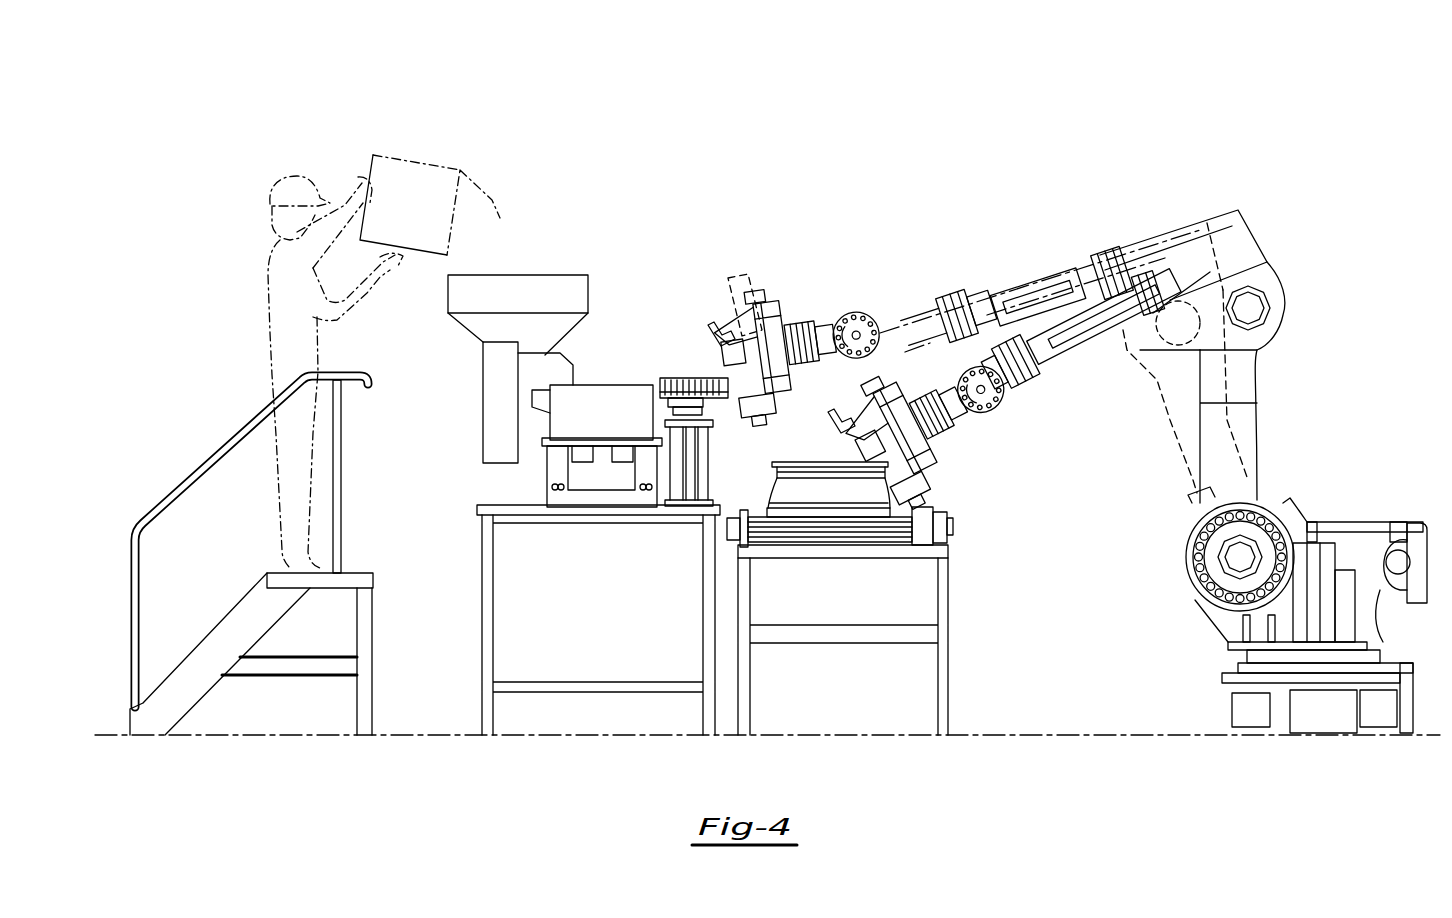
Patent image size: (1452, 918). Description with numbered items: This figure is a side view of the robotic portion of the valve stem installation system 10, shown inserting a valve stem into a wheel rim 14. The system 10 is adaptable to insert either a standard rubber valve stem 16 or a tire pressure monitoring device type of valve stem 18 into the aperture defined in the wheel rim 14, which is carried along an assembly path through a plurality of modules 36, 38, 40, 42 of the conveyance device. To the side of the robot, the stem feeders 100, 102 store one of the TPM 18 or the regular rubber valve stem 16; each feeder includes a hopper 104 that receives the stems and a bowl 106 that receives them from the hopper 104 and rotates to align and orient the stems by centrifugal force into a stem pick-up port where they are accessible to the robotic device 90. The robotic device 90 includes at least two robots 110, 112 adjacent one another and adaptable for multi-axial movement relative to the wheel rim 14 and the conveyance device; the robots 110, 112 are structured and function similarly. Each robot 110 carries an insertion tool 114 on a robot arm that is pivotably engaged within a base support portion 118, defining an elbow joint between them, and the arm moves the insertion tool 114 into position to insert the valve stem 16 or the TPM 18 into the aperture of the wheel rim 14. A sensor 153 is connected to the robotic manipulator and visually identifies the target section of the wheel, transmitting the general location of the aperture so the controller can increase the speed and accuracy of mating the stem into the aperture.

The valve stem installation system 10 is at (874, 232).
The wheel rim 14 is at (820, 488).
The standard rubber valve stem 16 is at (683, 378).
The tire pressure monitoring device valve stem 18 is at (883, 487).
The module 36 is at (928, 621).
The module 38 is at (928, 621).
The module 40 is at (928, 621).
The module 42 is at (948, 578).
The robotic device 90 is at (1282, 236).
The stem feeder 100 is at (550, 467).
The stem feeder 102 is at (450, 352).
The hopper 104 is at (548, 328).
The bowl 106 is at (527, 274).
The robot 110 is at (1202, 226).
The robot 112 is at (1235, 247).
The insertion tool 114 is at (766, 280).
The base support portion 118 is at (1243, 423).
The sensor 153 is at (712, 322).